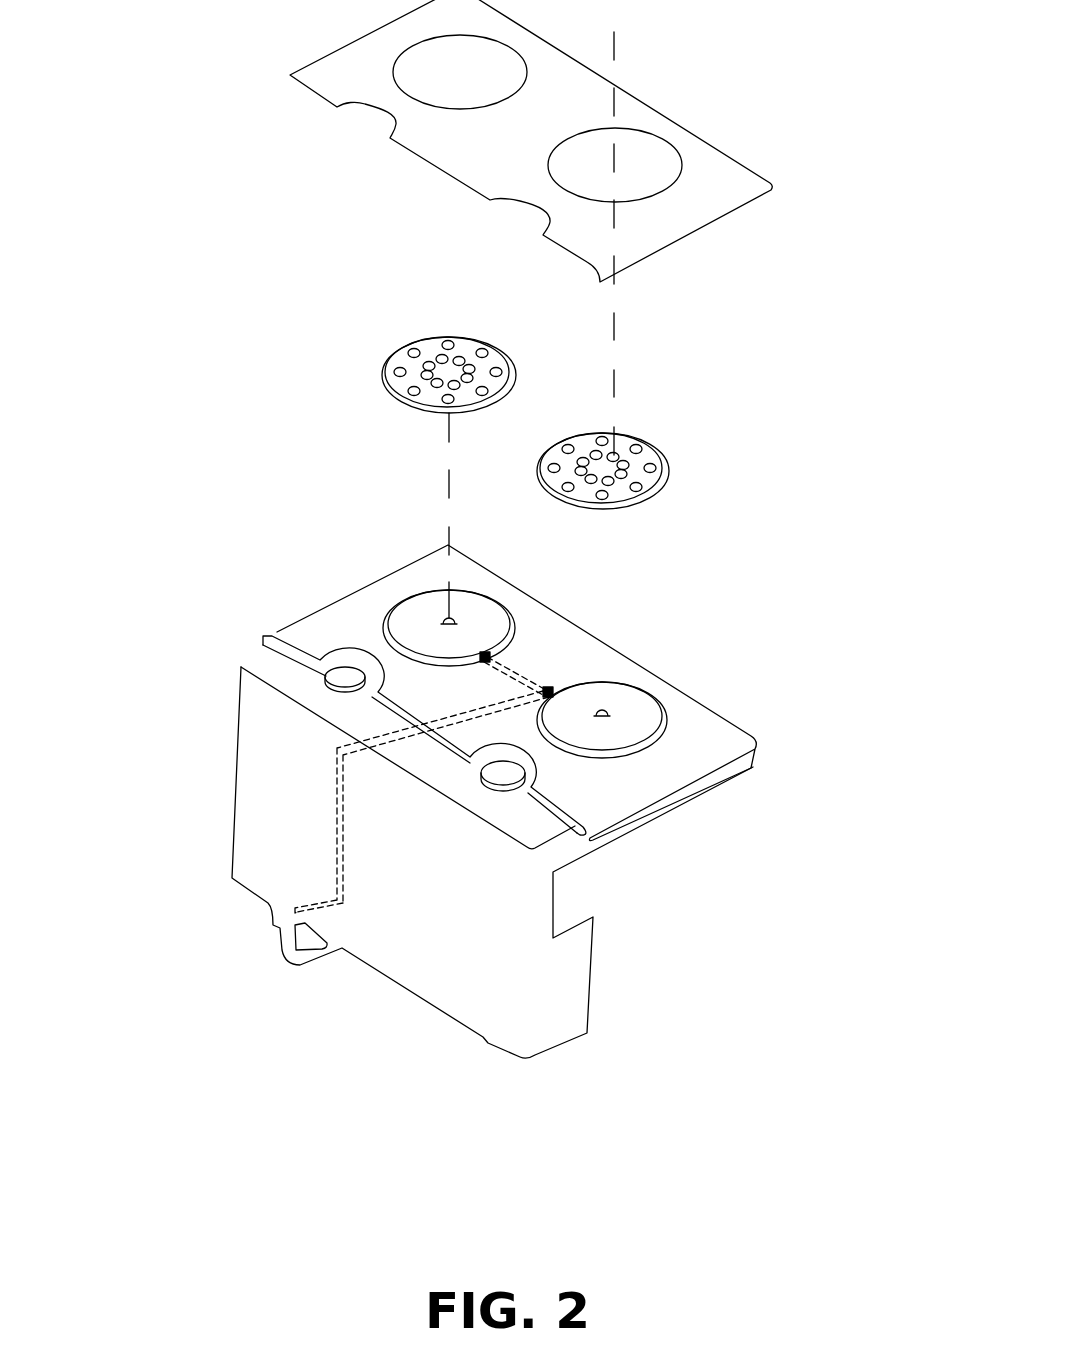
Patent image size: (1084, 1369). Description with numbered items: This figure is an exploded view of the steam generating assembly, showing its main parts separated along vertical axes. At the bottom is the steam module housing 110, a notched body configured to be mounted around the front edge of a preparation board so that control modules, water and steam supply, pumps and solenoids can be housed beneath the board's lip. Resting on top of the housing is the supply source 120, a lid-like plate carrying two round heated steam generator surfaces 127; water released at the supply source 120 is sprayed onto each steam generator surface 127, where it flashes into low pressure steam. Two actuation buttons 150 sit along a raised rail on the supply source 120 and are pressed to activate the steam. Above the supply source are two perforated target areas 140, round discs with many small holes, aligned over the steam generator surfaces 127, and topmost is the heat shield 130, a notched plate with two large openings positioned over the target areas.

The steam module housing 110 is at (275, 927).
The supply source 120 is at (612, 731).
The steam generator surface 127 is at (615, 717).
The heat shield 130 is at (713, 162).
The perforated target area 140 is at (407, 360).
The actuation button 150 is at (347, 678).